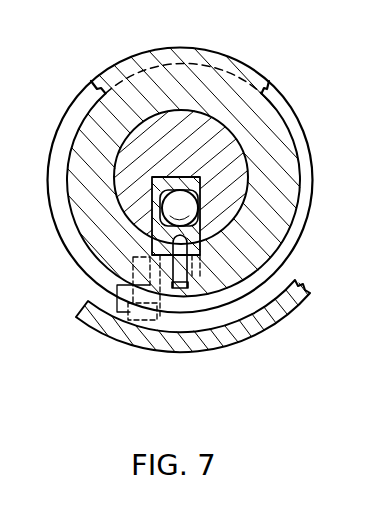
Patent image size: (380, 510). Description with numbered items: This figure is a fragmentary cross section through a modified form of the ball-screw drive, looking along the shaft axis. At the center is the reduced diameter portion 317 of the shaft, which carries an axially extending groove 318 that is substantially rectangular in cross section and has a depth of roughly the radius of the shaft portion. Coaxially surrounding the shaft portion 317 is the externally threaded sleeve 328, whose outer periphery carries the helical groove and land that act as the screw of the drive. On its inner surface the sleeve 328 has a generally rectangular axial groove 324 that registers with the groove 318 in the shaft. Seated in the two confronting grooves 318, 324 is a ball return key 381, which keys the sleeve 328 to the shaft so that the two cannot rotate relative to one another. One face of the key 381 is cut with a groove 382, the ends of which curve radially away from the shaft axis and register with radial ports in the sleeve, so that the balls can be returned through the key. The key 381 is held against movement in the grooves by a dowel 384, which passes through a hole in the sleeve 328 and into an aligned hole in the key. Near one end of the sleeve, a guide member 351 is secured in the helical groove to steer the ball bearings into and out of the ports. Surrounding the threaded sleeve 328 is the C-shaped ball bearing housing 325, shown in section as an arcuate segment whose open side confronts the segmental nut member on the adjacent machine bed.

The reduced diameter portion 317 is at (117, 167).
The axially extending groove 318 is at (203, 162).
The axially extending groove 324 is at (201, 249).
The C-shaped ball bearing housing 325 is at (252, 337).
The externally threaded sleeve 328 is at (200, 46).
The guide member 351 is at (173, 322).
The ball return key 381 is at (152, 208).
The groove 382 is at (200, 184).
The dowel 384 is at (180, 287).